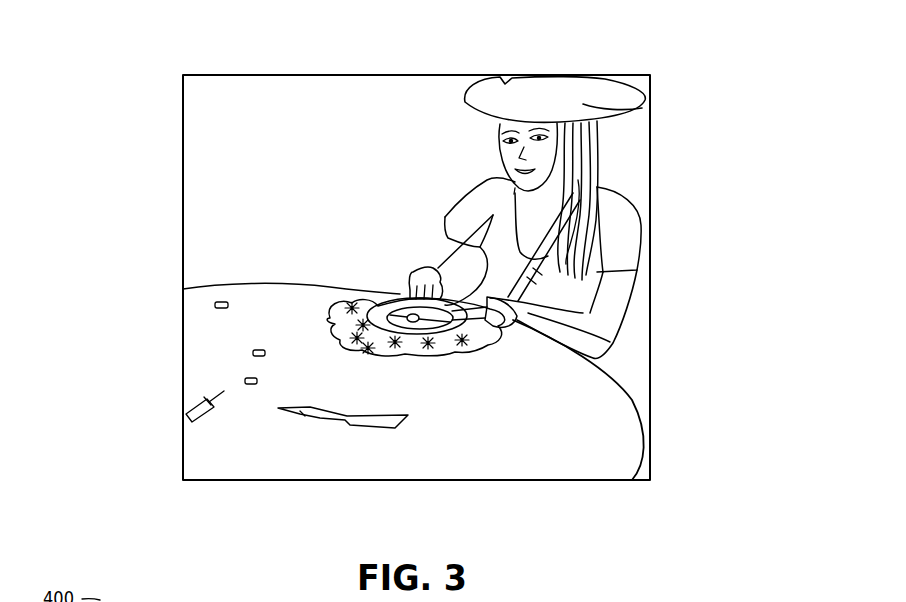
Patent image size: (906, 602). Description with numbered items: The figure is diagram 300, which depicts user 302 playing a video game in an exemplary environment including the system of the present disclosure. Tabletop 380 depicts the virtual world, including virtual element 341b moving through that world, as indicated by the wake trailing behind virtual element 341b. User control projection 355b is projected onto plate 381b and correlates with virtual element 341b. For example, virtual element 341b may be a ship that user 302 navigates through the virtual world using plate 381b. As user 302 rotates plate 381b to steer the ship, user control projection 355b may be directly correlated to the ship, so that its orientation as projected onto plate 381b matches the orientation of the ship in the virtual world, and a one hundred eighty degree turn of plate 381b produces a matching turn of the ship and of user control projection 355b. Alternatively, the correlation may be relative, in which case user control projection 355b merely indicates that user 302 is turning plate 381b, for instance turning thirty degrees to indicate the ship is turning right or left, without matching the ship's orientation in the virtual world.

The diagram 300 is at (133, 70).
The user 302 is at (640, 107).
The tabletop 380 is at (570, 405).
The plate 381b is at (383, 305).
The virtual element 341b is at (303, 410).
The user control projection 355b is at (423, 324).